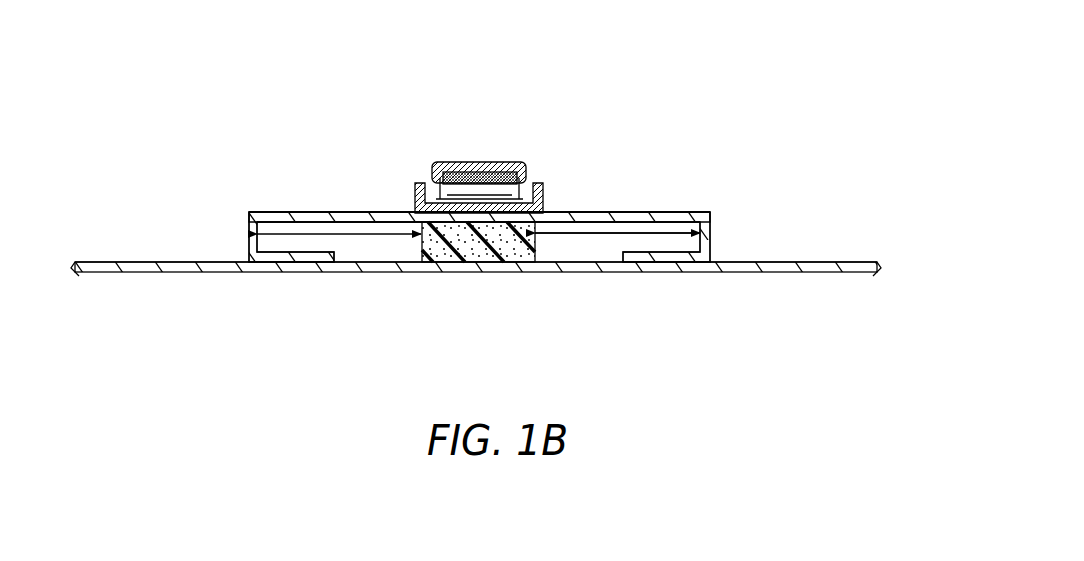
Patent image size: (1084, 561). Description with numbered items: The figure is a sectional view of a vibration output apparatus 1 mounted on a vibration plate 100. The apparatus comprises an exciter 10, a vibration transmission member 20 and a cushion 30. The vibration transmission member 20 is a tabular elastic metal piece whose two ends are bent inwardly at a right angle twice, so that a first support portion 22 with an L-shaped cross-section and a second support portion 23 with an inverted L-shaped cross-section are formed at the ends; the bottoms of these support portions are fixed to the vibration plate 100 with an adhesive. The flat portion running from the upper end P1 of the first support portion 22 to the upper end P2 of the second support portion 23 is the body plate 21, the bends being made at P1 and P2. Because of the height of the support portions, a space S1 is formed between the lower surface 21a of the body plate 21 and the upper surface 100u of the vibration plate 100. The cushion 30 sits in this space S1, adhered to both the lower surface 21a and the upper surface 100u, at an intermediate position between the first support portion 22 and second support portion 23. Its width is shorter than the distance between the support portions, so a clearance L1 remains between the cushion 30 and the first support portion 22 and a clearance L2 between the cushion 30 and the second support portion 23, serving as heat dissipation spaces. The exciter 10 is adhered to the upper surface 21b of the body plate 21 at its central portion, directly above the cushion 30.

The vibration output apparatus 1 is at (270, 113).
The exciter 10 is at (447, 147).
The vibration transmission member 20 is at (699, 155).
The body plate 21 is at (677, 212).
The lower surface of body plate 21a is at (378, 228).
The upper surface of body plate 21b is at (590, 212).
The first support portion 22 is at (252, 235).
The second support portion 23 is at (705, 237).
The cushion 30 is at (478, 254).
The vibration plate 100 is at (663, 267).
The upper surface of vibration plate 100u is at (378, 262).
The upper end of first support portion P1 is at (248, 212).
The upper end of second support portion P2 is at (707, 212).
The clearance L1 is at (347, 237).
The clearance L2 is at (602, 237).
The space S1 is at (592, 258).